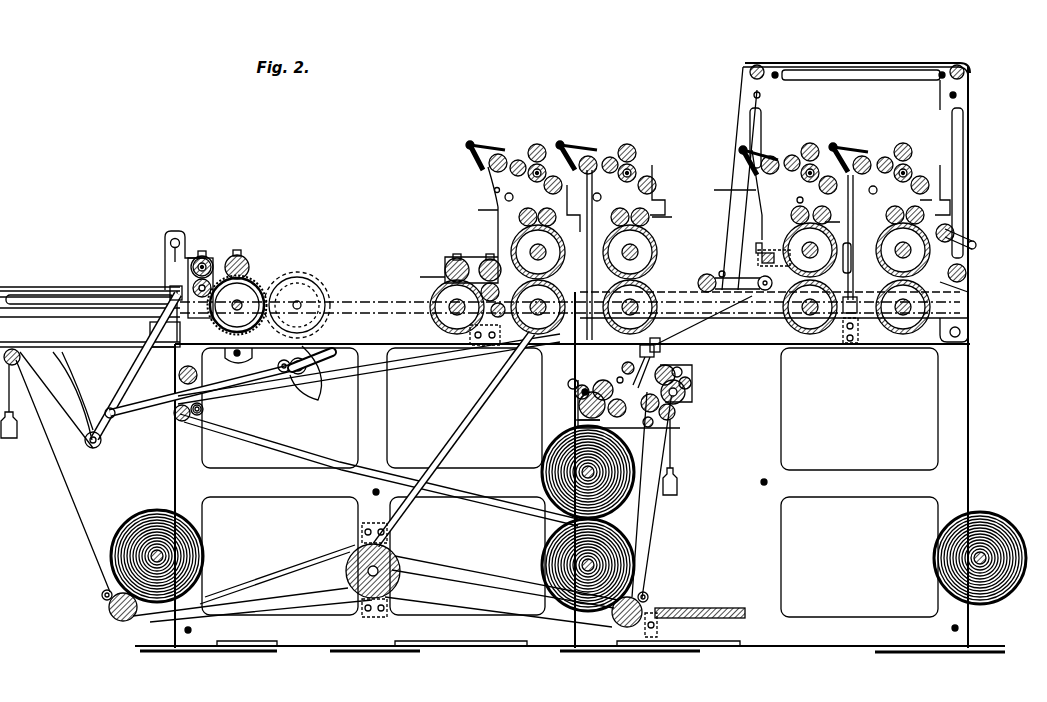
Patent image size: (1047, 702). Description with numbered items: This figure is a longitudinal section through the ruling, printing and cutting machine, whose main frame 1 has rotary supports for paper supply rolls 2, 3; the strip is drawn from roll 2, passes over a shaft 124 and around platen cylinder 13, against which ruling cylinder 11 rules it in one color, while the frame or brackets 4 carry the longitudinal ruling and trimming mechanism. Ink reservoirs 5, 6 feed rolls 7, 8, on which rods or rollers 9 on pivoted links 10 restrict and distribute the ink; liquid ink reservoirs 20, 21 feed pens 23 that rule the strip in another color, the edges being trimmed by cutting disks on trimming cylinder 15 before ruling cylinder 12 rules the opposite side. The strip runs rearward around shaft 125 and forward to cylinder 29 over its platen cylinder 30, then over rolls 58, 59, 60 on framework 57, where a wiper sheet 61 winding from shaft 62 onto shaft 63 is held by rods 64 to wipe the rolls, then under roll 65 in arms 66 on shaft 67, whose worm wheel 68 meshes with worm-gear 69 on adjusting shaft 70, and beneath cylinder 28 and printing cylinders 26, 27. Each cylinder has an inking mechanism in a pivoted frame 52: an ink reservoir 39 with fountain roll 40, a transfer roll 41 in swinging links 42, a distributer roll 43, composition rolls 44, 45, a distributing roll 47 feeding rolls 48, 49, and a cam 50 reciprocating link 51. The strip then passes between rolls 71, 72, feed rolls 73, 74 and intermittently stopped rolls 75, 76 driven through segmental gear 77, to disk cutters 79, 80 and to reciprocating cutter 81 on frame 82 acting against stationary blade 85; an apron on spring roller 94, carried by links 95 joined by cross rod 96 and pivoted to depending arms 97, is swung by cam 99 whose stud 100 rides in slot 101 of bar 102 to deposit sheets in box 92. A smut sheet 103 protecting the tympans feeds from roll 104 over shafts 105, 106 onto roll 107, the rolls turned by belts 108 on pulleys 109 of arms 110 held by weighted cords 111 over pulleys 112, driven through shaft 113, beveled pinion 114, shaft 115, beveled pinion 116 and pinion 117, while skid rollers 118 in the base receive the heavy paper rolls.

The main frame 1 is at (570, 359).
The paper supply roll 2 is at (546, 548).
The paper supply roll 3 is at (990, 522).
The frame or brackets 4 is at (630, 430).
The ink reservoir 5 is at (580, 421).
The ink reservoir 6 is at (688, 388).
The ink feed roll 7 is at (580, 407).
The ink feed roll 8 is at (686, 392).
The rods or rollers 9 is at (699, 367).
The pivoted links 10 is at (575, 393).
The ruling cylinder 11 is at (598, 383).
The ruling cylinder 12 is at (667, 366).
The platen cylinder 13 is at (633, 405).
The platen and trimming cylinder 15 is at (693, 402).
The liquid ink reservoir 20 is at (617, 380).
The liquid ink reservoir 21 is at (660, 354).
The pens 23 is at (638, 352).
The printing cylinder 26 is at (562, 243).
The printing cylinder 27 is at (903, 250).
The vertical ruling, perforating and numbering cylinder 28 is at (655, 243).
The vertical ruling, perforating and numbering cylinder 29 is at (810, 250).
The platen cylinder 30 is at (543, 330).
The ink reservoir 39 is at (478, 168).
The fountain roll 40 is at (499, 153).
The transfer roll 41 is at (521, 158).
The swinging links 42 is at (494, 190).
The distributer roll 43 is at (640, 168).
The composition roll 44 is at (545, 147).
The composition roll 45 is at (657, 181).
The distributing roll 47 is at (791, 197).
The inking roll 48 is at (519, 218).
The inking roll 49 is at (801, 208).
The cam 50 is at (563, 189).
The link 51 is at (881, 186).
The inking frame 52 is at (610, 195).
The framework 57 is at (861, 87).
The carrying roll 58 is at (967, 274).
The carrying roll 59 is at (966, 70).
The carrying roll 60 is at (757, 65).
The wiper sheet 61 is at (965, 108).
The shaft 62 is at (968, 288).
The shaft 63 is at (762, 96).
The rods 64 is at (777, 70).
The roll 65 is at (706, 274).
The arms 66 is at (721, 270).
The shaft 67 is at (760, 280).
The worm wheel 68 is at (758, 257).
The worm-gear 69 is at (758, 244).
The adjusting shaft 70 is at (856, 258).
The roll 71 is at (488, 259).
The roll 72 is at (499, 298).
The feed roll 73 is at (452, 258).
The feed roll 74 is at (430, 307).
The feed roll 75 is at (243, 258).
The feed roll 76 is at (262, 290).
The segmental gear 77 is at (306, 275).
The cutter roll 79 is at (205, 256).
The cutter roll 80 is at (192, 287).
The reciprocating cutter 81 is at (186, 248).
The cutter frame 82 is at (170, 243).
The stationary cutting blade 85 is at (192, 288).
The box 92 is at (90, 363).
The spring roller 94 is at (170, 290).
The links 95 is at (152, 338).
The cross rod 96 is at (112, 418).
The depending arms 97 is at (110, 410).
The cam or eccentric 99 is at (318, 397).
The stud 100 is at (283, 364).
The slot 101 is at (330, 358).
The bar 102 is at (225, 392).
The slip or smut sheet 103 is at (397, 473).
The roll 104 is at (543, 478).
The shaft 105 is at (183, 421).
The shaft 106 is at (190, 365).
The roll 107 is at (205, 538).
The belts 108 is at (302, 566).
The pulleys 109 is at (120, 620).
The pivoted arms 110 is at (381, 601).
The weighted cords 111 is at (66, 486).
The pulleys 112 is at (20, 362).
The shaft 113 is at (400, 562).
The beveled pinion 114 is at (398, 546).
The shaft 115 is at (462, 432).
The beveled pinion 116 is at (490, 329).
The pinion 117 is at (352, 592).
The skid rollers 118 is at (695, 609).
The shaft 124 is at (655, 425).
The shaft 125 is at (204, 410).